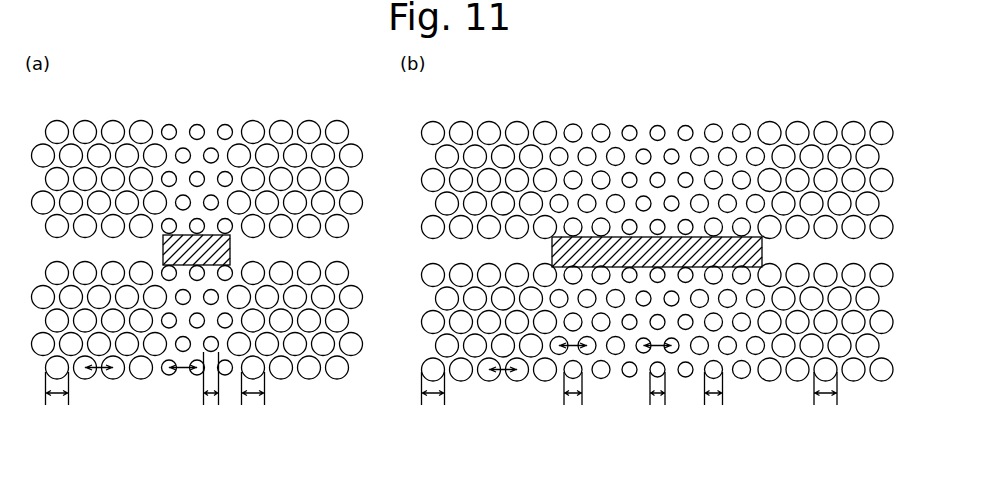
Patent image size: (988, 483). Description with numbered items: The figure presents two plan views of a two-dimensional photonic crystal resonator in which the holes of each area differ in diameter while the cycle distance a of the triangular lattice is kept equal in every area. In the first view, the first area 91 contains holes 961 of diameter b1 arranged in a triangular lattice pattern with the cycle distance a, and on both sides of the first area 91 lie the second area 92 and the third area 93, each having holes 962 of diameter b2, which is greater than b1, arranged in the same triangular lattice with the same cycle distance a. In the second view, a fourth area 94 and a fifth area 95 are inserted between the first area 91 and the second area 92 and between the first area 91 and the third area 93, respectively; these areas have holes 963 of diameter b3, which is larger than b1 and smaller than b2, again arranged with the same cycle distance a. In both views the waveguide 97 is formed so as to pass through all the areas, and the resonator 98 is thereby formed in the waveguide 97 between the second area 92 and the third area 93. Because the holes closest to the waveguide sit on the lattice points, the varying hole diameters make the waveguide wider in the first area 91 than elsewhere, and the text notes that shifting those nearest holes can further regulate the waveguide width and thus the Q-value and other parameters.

The first area 91 is at (693, 405).
The second area 92 is at (543, 108).
The third area 93 is at (771, 108).
The fourth area 94 is at (552, 405).
The fifth area 95 is at (762, 405).
The waveguide 97 is at (847, 258).
The resonator 98 is at (603, 253).
The holes 961 is at (700, 443).
The holes 962 is at (812, 443).
The holes 963 is at (757, 443).
The cycle distance a is at (670, 443).
The diameter b1 is at (437, 391).
The diameter b2 is at (442, 401).
The diameter b3 is at (644, 401).